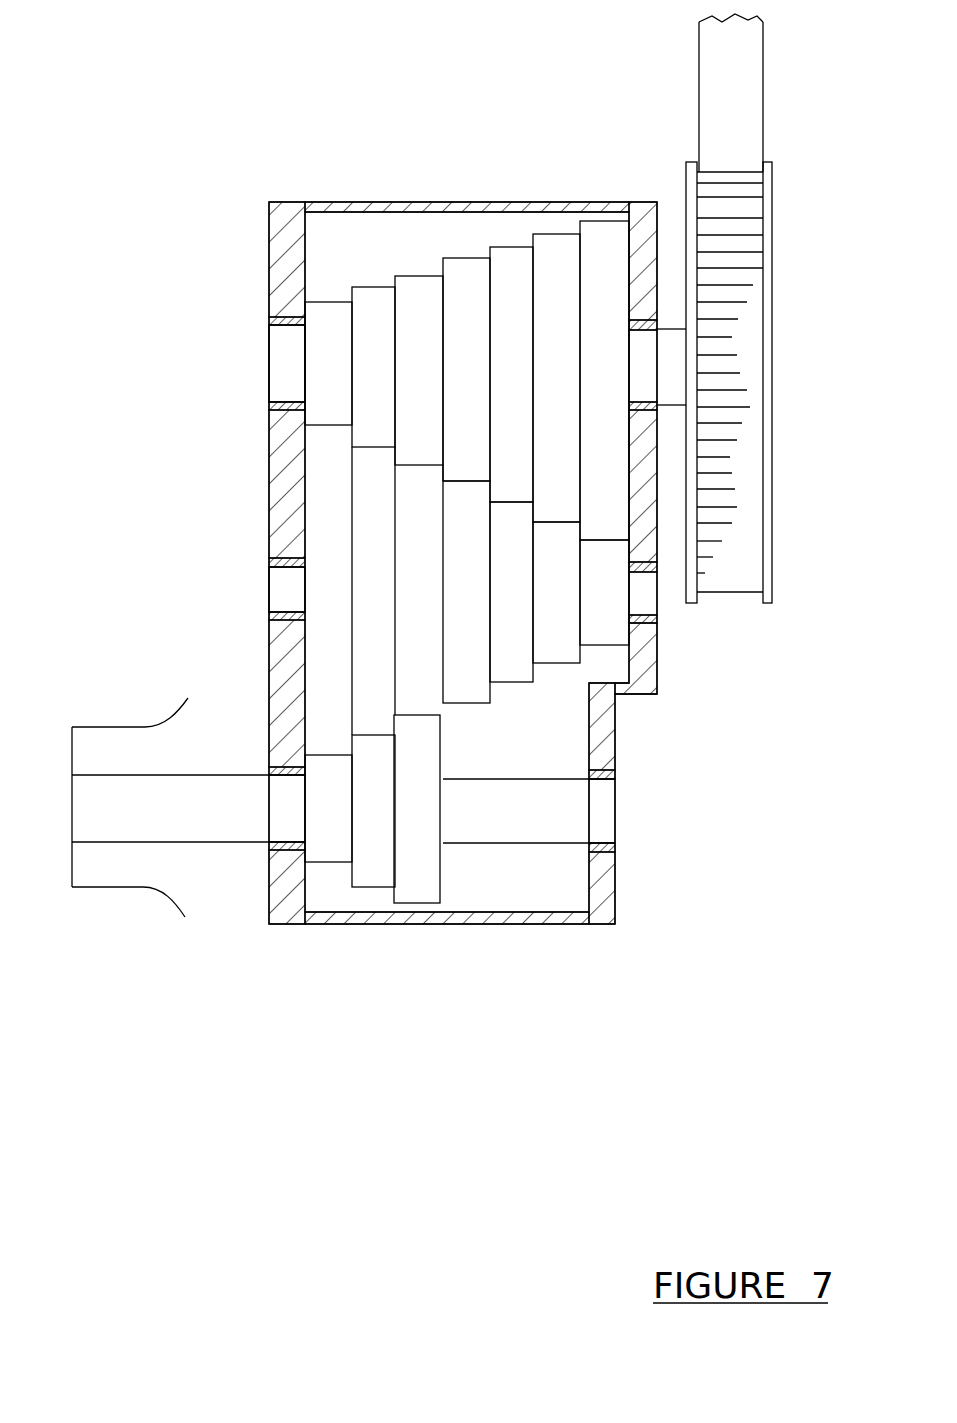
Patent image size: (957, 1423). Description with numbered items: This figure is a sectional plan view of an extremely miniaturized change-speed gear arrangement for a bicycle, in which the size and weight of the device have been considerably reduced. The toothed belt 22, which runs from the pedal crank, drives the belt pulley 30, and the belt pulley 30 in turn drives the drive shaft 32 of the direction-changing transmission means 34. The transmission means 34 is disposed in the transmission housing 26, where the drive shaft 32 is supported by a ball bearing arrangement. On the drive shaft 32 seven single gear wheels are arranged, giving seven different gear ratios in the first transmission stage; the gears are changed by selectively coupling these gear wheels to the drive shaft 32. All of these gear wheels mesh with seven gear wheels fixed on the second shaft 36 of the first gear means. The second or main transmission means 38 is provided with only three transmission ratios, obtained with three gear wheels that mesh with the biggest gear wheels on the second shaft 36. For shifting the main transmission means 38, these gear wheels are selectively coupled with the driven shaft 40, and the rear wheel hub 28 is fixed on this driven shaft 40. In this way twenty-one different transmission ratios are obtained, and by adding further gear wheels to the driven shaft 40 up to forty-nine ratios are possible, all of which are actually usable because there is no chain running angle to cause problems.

The toothed belt 22 is at (722, 121).
The transmission housing 26 is at (337, 203).
The rear wheel hub 28 is at (103, 875).
The belt pulley 30 is at (768, 357).
The drive shaft 32 is at (278, 382).
The transmission means 34 is at (428, 468).
The second shaft 36 is at (283, 589).
The main transmission means 38 is at (382, 737).
The driven shaft 40 is at (593, 822).